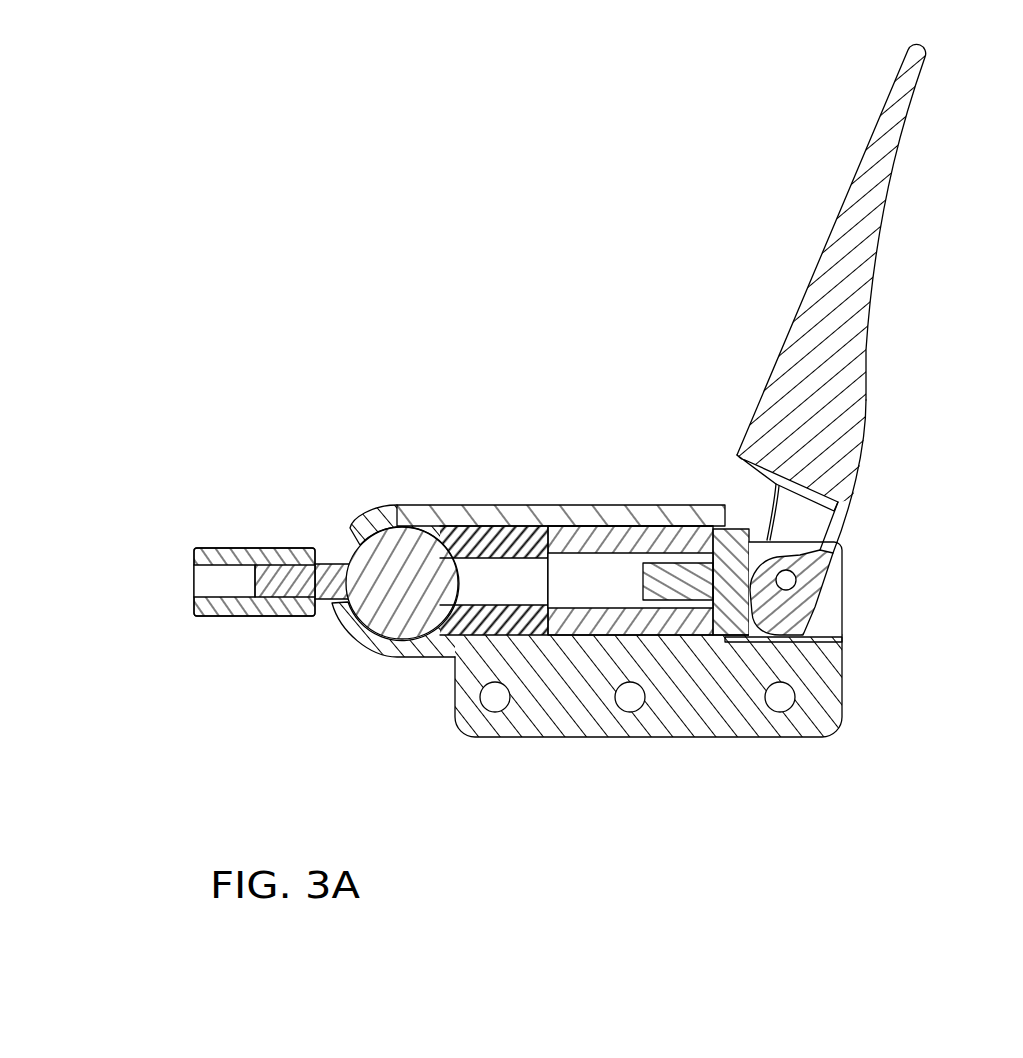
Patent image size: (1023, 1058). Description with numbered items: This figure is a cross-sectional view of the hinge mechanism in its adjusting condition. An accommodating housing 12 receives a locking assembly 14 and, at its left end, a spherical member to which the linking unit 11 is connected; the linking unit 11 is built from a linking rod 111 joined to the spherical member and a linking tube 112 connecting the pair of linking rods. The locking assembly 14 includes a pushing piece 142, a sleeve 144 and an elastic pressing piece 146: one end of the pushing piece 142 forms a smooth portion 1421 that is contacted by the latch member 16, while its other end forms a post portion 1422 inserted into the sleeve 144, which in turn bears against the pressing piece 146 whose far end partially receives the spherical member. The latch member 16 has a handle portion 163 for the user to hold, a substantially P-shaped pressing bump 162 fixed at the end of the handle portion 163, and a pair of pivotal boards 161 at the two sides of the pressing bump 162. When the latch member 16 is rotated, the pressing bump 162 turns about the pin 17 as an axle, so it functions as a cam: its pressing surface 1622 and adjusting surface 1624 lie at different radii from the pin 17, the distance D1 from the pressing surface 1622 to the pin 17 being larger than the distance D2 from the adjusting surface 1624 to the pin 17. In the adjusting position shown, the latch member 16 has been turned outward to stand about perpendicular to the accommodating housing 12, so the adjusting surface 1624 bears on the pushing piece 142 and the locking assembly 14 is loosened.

The linking unit 11 is at (275, 561).
The linking rod 111 is at (283, 592).
The linking tube 112 is at (283, 548).
The accommodating housing 12 is at (473, 505).
The locking assembly 14 is at (642, 636).
The pushing piece 142 is at (708, 620).
The smooth portion 1421 is at (733, 628).
The post portion 1422 is at (662, 586).
The sleeve 144 is at (588, 624).
The elastic pressing piece 146 is at (743, 792).
The latch member 16 is at (863, 339).
The pivotal board 161 is at (833, 488).
The pressing bump 162 is at (838, 535).
The handle portion 163 is at (872, 225).
The pressing surface 1622 is at (793, 637).
The adjusting surface 1624 is at (830, 596).
The pin 17 is at (797, 577).
The distance D1 is at (803, 628).
The distance D2 is at (810, 317).